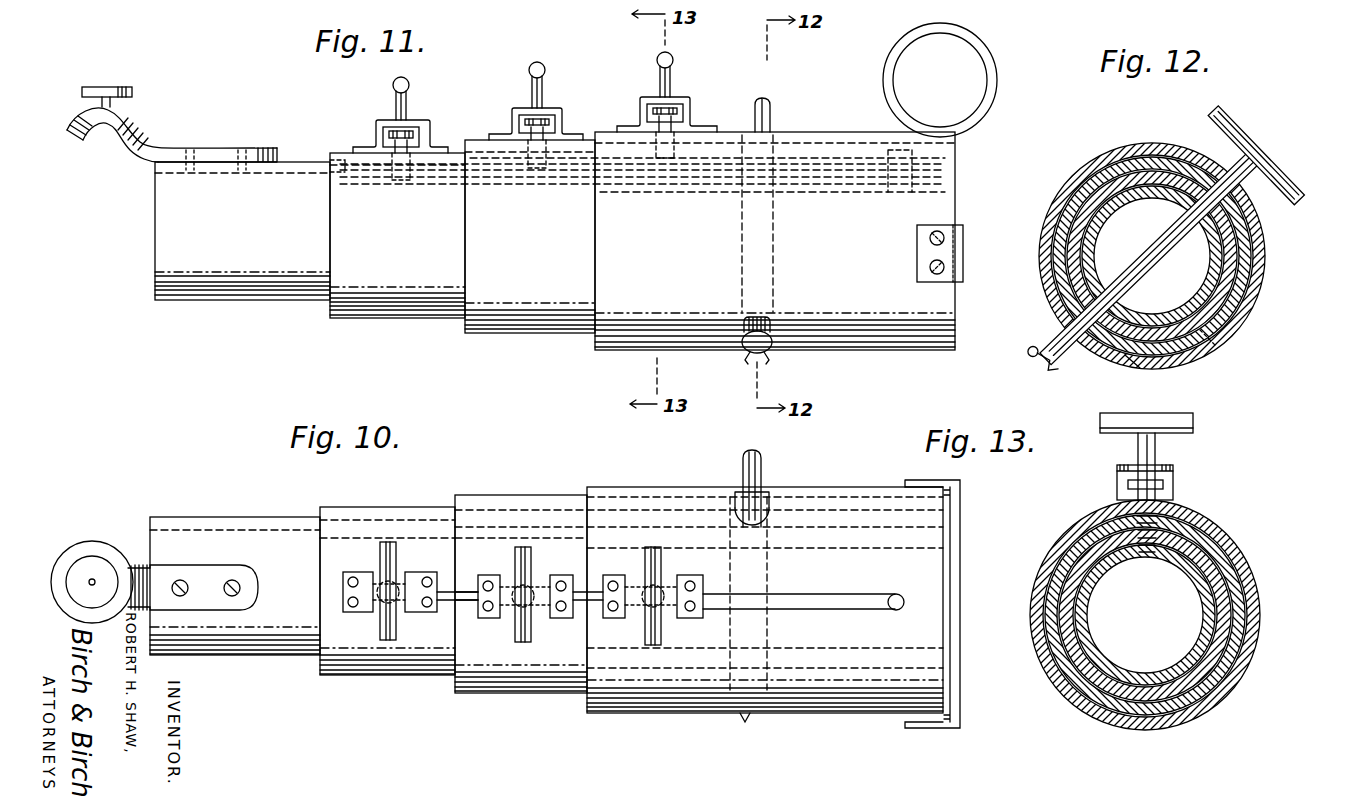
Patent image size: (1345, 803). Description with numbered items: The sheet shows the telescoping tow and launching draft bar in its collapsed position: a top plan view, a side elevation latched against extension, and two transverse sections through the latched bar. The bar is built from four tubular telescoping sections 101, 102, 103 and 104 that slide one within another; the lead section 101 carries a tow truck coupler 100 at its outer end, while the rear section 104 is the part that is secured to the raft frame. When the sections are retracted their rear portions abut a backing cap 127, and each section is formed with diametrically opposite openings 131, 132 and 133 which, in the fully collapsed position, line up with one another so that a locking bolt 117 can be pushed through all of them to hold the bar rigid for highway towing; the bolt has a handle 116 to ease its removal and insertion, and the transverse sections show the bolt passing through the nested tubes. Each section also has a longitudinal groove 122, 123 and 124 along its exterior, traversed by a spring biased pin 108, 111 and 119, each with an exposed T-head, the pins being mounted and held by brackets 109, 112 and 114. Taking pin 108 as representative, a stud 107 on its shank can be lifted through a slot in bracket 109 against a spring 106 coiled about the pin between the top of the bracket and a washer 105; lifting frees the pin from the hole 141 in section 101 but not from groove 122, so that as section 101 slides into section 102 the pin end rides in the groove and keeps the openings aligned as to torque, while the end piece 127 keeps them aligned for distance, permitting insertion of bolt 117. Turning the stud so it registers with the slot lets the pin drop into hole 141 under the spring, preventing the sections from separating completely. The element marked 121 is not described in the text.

In FIG. 11, the tow truck coupler 100 is at (116, 122).
In FIG. 10, the tow truck coupler 100 is at (108, 543).
In FIG. 11, the lead section 101 is at (170, 242).
In FIG. 10, the lead section 101 is at (248, 508).
In FIG. 12, the lead section 101 is at (1180, 310).
In FIG. 13, the lead section 101 is at (1210, 608).
In FIG. 11, the telescoping section 102 is at (397, 235).
In FIG. 10, the telescoping section 102 is at (412, 497).
In FIG. 12, the telescoping section 102 is at (1225, 260).
In FIG. 13, the telescoping section 102 is at (1222, 637).
In FIG. 11, the telescoping section 103 is at (530, 236).
In FIG. 10, the telescoping section 103 is at (540, 485).
In FIG. 12, the telescoping section 103 is at (1240, 292).
In FIG. 13, the telescoping section 103 is at (1225, 662).
In FIG. 11, the rear section 104 is at (668, 193).
In FIG. 10, the rear section 104 is at (665, 477).
In FIG. 12, the rear section 104 is at (1255, 320).
In FIG. 13, the rear section 104 is at (1225, 690).
In FIG. 13, the washer 105 is at (1128, 486).
In FIG. 11, the spring 106 is at (388, 131).
In FIG. 13, the spring 106 is at (1117, 470).
In FIG. 11, the stud 107 is at (412, 105).
In FIG. 13, the stud 107 is at (1160, 455).
In FIG. 11, the spring biased pin 108 is at (396, 150).
In FIG. 11, the bracket 109 is at (433, 135).
In FIG. 10, the bracket 109 is at (398, 558).
In FIG. 11, the spring biased pin 111 is at (532, 138).
In FIG. 11, the bracket 112 is at (580, 116).
In FIG. 10, the bracket 112 is at (548, 557).
In FIG. 11, the bracket 114 is at (712, 106).
In FIG. 10, the bracket 114 is at (663, 565).
In FIG. 12, the handle 116 is at (1273, 130).
In FIG. 11, the locking bolt 117 is at (772, 108).
In FIG. 10, the locking bolt 117 is at (752, 488).
In FIG. 12, the locking bolt 117 is at (1164, 235).
In FIG. 11, the spring biased pin 119 is at (660, 130).
In FIG. 11, the connecting link 121 is at (338, 150).
In FIG. 10, the connecting link 121 is at (447, 603).
In FIG. 11, the longitudinal groove 122 is at (665, 160).
In FIG. 13, the longitudinal groove 122 is at (1157, 520).
In FIG. 11, the longitudinal groove 123 is at (537, 170).
In FIG. 13, the longitudinal groove 123 is at (1156, 535).
In FIG. 11, the longitudinal groove 124 is at (404, 182).
In FIG. 13, the longitudinal groove 124 is at (1155, 550).
In FIG. 11, the backing cap 127 is at (963, 245).
In FIG. 10, the backing cap 127 is at (960, 500).
In FIG. 12, the opening 131 is at (1205, 350).
In FIG. 12, the opening 132 is at (1130, 360).
In FIG. 12, the opening 133 is at (1036, 365).
In FIG. 11, the hole 141 is at (896, 192).
In FIG. 10, the hole 141 is at (890, 610).